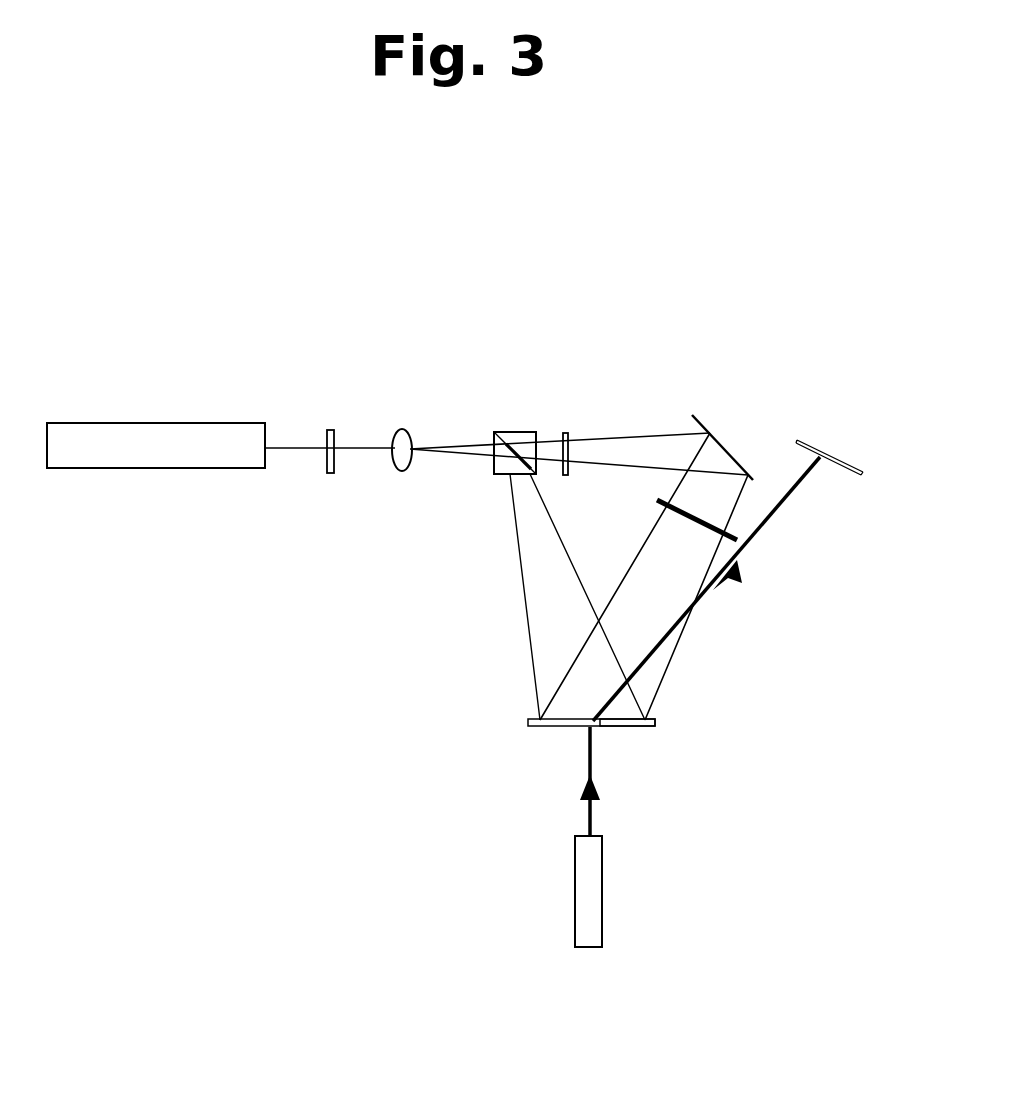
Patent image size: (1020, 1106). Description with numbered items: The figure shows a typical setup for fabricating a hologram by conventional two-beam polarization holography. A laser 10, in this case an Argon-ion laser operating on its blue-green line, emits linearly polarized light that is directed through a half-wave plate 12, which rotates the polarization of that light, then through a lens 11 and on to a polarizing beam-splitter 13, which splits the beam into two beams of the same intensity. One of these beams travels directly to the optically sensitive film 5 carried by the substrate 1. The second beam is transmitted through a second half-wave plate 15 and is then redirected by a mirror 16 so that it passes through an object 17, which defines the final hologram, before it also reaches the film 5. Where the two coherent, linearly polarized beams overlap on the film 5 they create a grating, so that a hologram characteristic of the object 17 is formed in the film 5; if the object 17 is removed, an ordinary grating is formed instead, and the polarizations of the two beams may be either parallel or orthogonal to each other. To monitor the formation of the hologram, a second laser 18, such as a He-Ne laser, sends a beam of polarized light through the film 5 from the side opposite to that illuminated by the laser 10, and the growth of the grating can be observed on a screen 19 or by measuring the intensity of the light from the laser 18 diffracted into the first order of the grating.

The laser 10 is at (126, 421).
The lens 11 is at (410, 430).
The half-wave plate 12 is at (330, 476).
The polarizing beam-splitter 13 is at (494, 476).
The second half-wave plate 15 is at (566, 432).
The mirror 16 is at (722, 442).
The object 17 is at (738, 536).
The screen 19 is at (848, 458).
The film 5 is at (536, 716).
The substrate 1 is at (640, 728).
The laser 18 is at (603, 925).